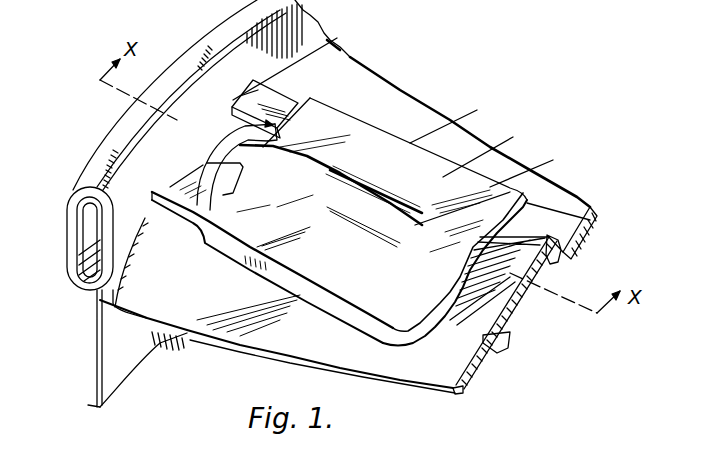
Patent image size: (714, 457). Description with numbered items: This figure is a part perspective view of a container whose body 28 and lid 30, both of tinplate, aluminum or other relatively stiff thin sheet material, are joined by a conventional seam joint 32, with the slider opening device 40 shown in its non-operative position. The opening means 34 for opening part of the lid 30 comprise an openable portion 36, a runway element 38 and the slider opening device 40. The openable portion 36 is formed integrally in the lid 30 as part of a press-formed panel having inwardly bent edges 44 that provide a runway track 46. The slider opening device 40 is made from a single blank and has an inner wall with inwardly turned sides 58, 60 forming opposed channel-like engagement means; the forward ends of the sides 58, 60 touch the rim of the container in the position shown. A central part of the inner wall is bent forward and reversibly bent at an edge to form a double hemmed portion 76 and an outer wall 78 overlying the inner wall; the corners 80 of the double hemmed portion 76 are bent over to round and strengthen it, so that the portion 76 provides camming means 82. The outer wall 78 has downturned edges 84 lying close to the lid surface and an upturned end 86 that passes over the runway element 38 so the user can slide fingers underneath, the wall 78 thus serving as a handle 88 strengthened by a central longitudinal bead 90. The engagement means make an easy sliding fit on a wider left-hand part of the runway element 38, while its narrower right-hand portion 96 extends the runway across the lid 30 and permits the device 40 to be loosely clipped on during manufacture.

The body 28 is at (97, 348).
The lid 30 is at (563, 200).
The seam joint 32 is at (92, 212).
The opening means 34 is at (353, 110).
The openable portion 36 is at (290, 97).
The runway element 38 is at (217, 137).
The slider opening device 40 is at (397, 338).
The inwardly bent edges 44 is at (480, 343).
The runway track 46 is at (563, 263).
The inwardly turned side 58 is at (250, 95).
The inwardly turned side 60 is at (200, 200).
The double hemmed portion 76 is at (218, 155).
The outer wall 78 is at (395, 175).
The corners 80 is at (220, 173).
The camming means 82 is at (253, 157).
The downturned edges 84 is at (477, 110).
The upturned end 86 is at (587, 227).
The handle 88 is at (513, 137).
The central longitudinal bead 90 is at (553, 160).
The right-hand portion 96 is at (490, 297).